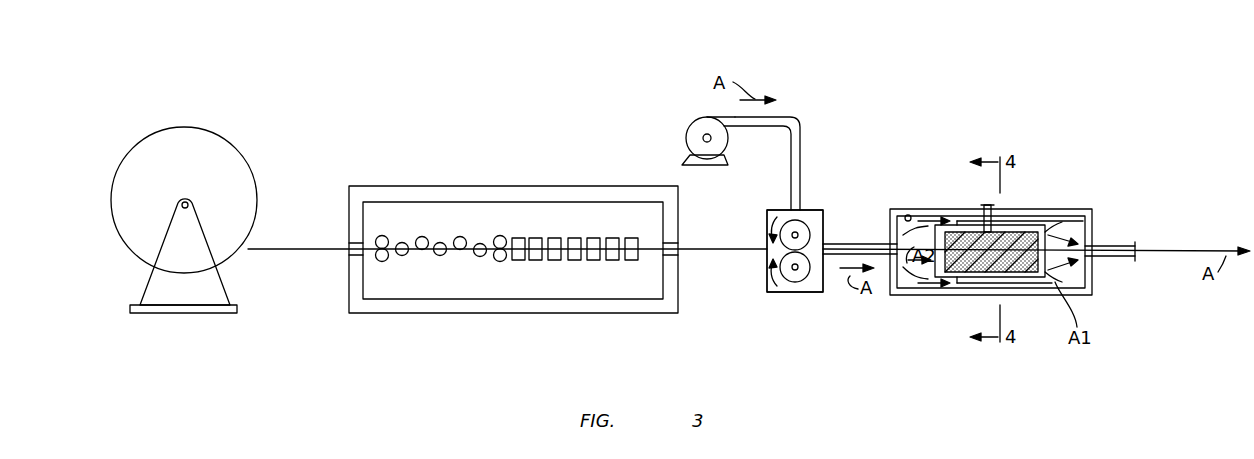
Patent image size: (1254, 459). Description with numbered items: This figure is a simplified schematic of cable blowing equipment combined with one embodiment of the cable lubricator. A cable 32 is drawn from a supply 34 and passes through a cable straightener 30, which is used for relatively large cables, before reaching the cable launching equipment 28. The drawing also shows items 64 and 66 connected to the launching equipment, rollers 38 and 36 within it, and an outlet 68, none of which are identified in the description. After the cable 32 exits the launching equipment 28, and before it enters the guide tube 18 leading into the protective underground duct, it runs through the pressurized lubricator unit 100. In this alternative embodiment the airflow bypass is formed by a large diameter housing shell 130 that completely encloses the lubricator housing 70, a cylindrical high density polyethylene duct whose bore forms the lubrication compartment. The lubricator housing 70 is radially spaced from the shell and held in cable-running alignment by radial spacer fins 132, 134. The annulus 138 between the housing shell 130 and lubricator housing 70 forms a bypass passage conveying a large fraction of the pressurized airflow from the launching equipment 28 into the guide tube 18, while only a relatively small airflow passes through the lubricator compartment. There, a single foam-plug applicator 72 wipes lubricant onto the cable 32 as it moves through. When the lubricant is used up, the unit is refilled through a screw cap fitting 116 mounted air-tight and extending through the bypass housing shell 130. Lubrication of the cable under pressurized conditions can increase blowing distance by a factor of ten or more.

The supply spool 34 is at (185, 128).
The cable 32 is at (318, 248).
The cable straightener 30 is at (526, 180).
The lubricator housing (HDPE duct) 70 is at (465, 215).
The blower 64 is at (686, 130).
The air conduit 66 is at (803, 160).
The cable launching equipment 28 is at (768, 202).
The upper drive roller 38 is at (800, 232).
The lower drive roller 36 is at (798, 275).
The feed housing outlet 68 is at (825, 285).
The guide tube 18 is at (840, 244).
The cable lubricator 100 is at (1090, 202).
The housing shell 130 is at (922, 213).
The radial spacer fin 134 is at (972, 220).
The radial spacer fin 132 is at (987, 283).
The screw cap fitting 116 is at (993, 204).
The foam-plug applicator 72 is at (1050, 230).
The annulus 138 is at (905, 214).